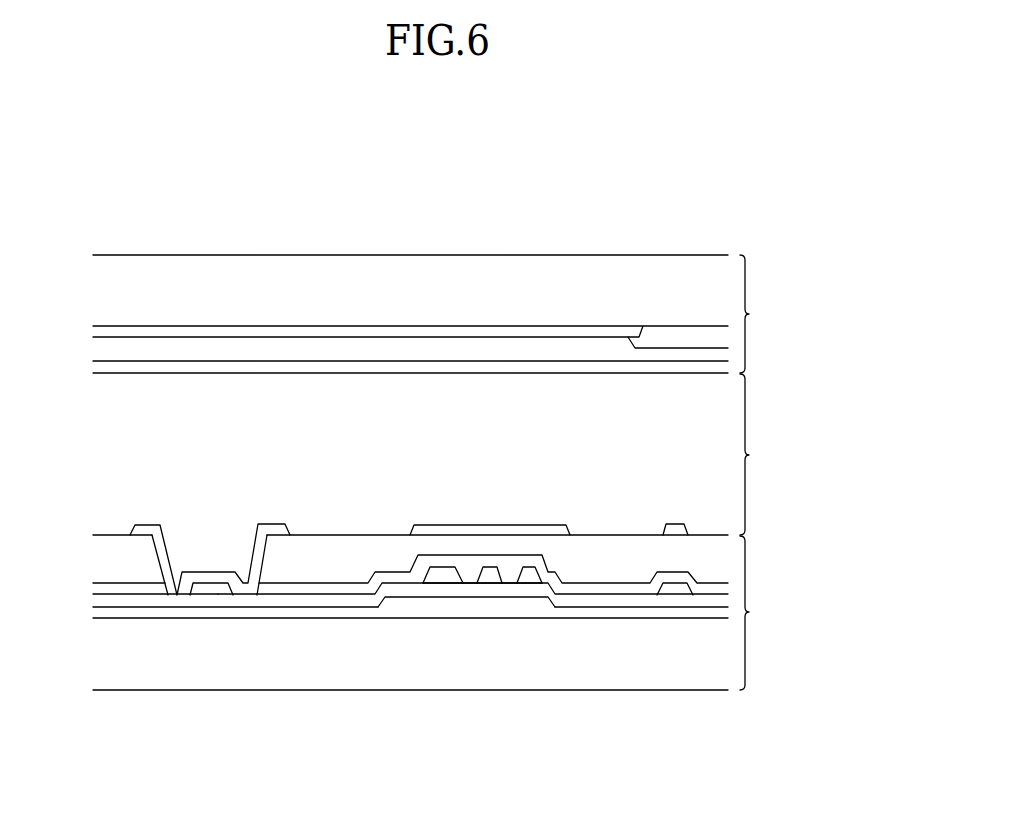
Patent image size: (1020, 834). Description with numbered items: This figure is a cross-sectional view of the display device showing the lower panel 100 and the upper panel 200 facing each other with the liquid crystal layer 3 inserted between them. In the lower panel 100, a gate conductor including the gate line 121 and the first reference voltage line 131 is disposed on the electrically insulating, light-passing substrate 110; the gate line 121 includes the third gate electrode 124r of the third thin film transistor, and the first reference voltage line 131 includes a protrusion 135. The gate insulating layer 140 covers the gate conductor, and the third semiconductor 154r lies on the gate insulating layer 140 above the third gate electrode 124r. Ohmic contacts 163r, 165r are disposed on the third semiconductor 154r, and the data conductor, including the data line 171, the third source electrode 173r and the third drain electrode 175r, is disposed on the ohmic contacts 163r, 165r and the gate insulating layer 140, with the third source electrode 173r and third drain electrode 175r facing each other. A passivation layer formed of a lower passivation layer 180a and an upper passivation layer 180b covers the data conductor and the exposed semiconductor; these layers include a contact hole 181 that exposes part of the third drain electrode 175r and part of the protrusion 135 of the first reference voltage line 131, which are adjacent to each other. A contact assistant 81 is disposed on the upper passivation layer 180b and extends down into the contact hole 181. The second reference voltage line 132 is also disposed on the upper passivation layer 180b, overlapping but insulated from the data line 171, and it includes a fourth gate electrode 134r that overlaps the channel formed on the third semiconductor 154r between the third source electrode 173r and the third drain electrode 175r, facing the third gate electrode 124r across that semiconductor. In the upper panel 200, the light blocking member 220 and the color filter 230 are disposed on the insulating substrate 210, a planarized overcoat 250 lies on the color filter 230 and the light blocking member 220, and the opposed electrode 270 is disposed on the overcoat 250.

The insulating substrate 210 is at (302, 273).
The light blocking member 220 is at (537, 332).
The color filter 230 is at (678, 340).
The overcoat 250 is at (427, 350).
The opposed electrode 270 is at (487, 366).
The upper panel 200 is at (761, 314).
The liquid crystal layer 3 is at (752, 454).
The lower panel 100 is at (761, 613).
The substrate 110 is at (370, 665).
The first reference voltage line 131 is at (119, 608).
The gate line 121 is at (620, 612).
The third gate electrode 124r is at (477, 610).
The protrusion 135 is at (205, 600).
The gate insulating layer 140 is at (258, 605).
The lower passivation layer 180a is at (137, 590).
The upper passivation layer 180b is at (336, 552).
The contact hole 181 is at (252, 560).
The contact assistant 81 is at (144, 526).
The third drain electrode 175r is at (442, 567).
The third source electrode 173r is at (493, 567).
The third semiconductor 154r is at (455, 588).
The ohmic contact 163r is at (490, 582).
The ohmic contact 165r is at (440, 582).
The fourth gate electrode 134r is at (465, 527).
The second reference voltage line 132 is at (675, 526).
The data line 171 is at (673, 590).